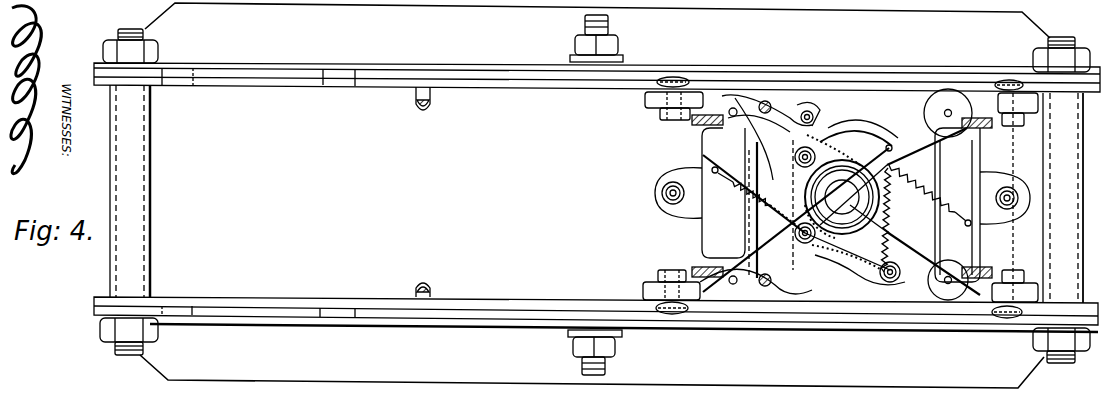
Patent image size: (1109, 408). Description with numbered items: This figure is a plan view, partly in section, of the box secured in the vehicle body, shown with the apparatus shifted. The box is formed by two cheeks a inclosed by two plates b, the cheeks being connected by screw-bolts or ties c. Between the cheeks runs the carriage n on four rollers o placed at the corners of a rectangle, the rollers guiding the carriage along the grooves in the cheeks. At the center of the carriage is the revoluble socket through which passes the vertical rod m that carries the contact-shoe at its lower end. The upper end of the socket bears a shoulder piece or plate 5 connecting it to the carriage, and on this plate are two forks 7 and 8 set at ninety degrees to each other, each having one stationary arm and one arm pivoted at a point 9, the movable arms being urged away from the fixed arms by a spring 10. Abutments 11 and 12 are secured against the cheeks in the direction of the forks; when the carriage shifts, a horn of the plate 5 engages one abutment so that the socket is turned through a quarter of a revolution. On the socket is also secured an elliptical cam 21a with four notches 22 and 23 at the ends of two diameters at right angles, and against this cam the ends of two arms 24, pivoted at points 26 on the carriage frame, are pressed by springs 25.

The cheek a is at (270, 77).
The plate b is at (228, 66).
The screw-bolt or tie c is at (600, 194).
The abutment 12 is at (425, 88).
The roller o is at (663, 80).
The carriage n is at (707, 114).
The abutment 11 is at (766, 100).
The fork 7 is at (786, 107).
The pivot point 9 is at (842, 197).
The vertical rod m is at (858, 145).
The shoulder piece or plate 5 is at (885, 165).
The notch or recess 22 is at (776, 202).
The elliptical cam 21a is at (842, 205).
The pivot point 26 is at (662, 195).
The spring 25 is at (840, 196).
The arm 24 is at (698, 127).
The notch or recess 23 is at (856, 225).
The fork 8 is at (786, 262).
The spring 10 is at (855, 275).